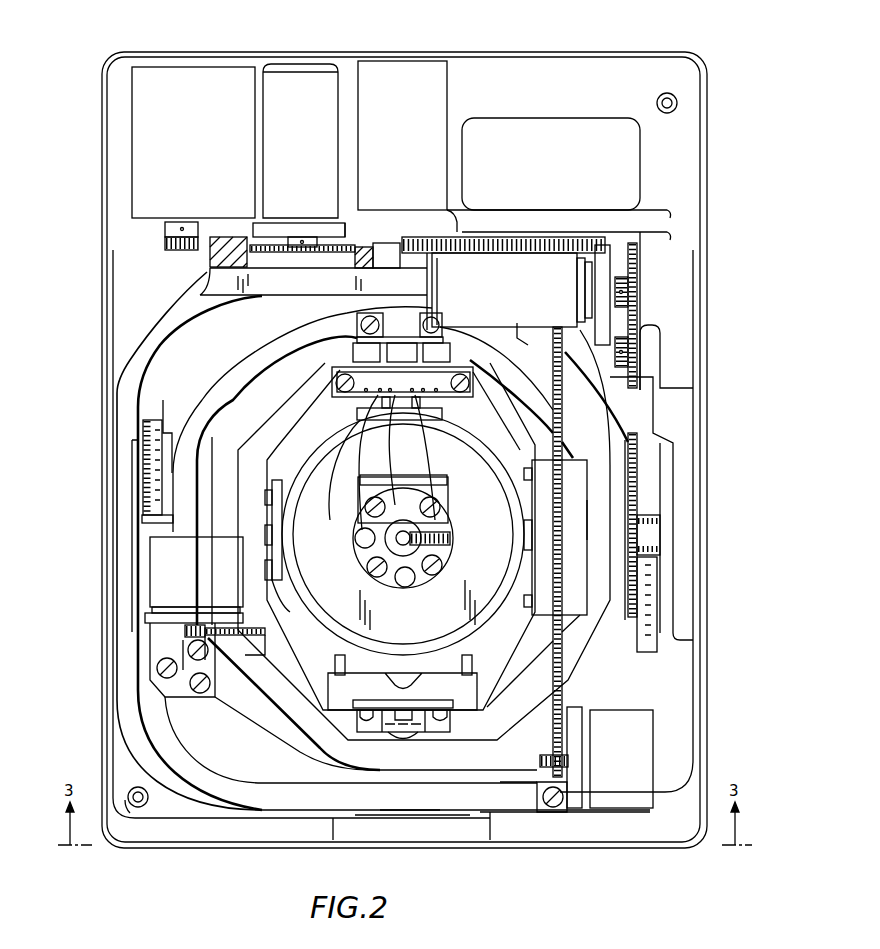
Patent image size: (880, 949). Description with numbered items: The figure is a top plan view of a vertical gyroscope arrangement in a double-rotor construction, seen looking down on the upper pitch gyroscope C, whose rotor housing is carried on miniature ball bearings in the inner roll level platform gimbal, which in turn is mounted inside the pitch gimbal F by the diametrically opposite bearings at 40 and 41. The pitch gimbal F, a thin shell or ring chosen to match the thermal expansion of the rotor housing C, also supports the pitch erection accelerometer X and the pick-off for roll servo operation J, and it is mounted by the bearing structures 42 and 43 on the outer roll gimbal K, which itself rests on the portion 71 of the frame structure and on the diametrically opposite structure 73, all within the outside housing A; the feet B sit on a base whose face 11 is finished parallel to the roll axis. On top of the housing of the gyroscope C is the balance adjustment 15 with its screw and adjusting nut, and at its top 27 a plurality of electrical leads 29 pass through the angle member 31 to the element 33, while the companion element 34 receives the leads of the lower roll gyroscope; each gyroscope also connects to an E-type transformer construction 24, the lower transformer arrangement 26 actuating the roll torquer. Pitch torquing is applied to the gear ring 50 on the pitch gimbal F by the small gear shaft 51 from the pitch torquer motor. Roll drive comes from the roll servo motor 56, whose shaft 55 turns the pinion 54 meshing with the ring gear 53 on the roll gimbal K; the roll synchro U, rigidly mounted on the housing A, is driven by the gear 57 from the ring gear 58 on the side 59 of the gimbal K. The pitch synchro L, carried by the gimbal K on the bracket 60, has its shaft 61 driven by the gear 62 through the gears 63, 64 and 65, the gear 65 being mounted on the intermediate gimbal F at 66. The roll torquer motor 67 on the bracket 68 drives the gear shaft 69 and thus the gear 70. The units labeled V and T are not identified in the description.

The outside housing A is at (648, 848).
The outer roll gimbal K is at (255, 808).
The pitch gimbal F is at (240, 718).
The feet B is at (292, 677).
The inner gimbal frame E is at (275, 470).
The roll servo V is at (157, 121).
The roll servo motor 56 is at (142, 118).
The roll synchro U is at (298, 82).
The slip ring assembly T is at (413, 77).
The diametrically opposite structure 73 is at (405, 216).
The shaft 55 is at (190, 223).
The small gear or pinion 54 is at (165, 250).
The gear 57 is at (290, 252).
The ring gear 58 is at (356, 258).
The side 59 is at (382, 280).
The ring gear 53 is at (520, 240).
The bearing 40 is at (478, 300).
The pitch synchro L is at (527, 341).
The bracket 60 is at (611, 255).
The shaft 61 is at (628, 286).
The gear 62 is at (637, 300).
The gear 63 is at (628, 348).
The bearing structure 43 is at (660, 545).
The gear 64 is at (637, 455).
The mounting point on intermediate gimbal 66 is at (636, 515).
The gear 65 is at (657, 600).
The gear ring 50 is at (560, 570).
The pitch erection accelerometer X is at (575, 515).
The pick-off for roll servo operation J is at (262, 347).
The E-type transformer construction 24 is at (450, 354).
The element 33 is at (442, 395).
The angle member 31 is at (447, 483).
The electrical leads 29 is at (440, 507).
The balance adjustment 15 is at (450, 538).
The top of pitch gyroscope 27 is at (420, 588).
The pitch gyroscope C is at (485, 610).
The bearing structure 42 is at (132, 553).
The lower transformer arrangement 26 is at (268, 535).
The roll torquer motor 67 is at (148, 588).
The bracket 68 is at (150, 618).
The gear shaft 69 is at (205, 637).
The gear 70 is at (265, 632).
The element 34 is at (277, 546).
The bearing 41 is at (410, 735).
The small gear shaft 51 is at (540, 762).
The face 11 is at (620, 803).
The portion of frame structure 71 is at (430, 840).